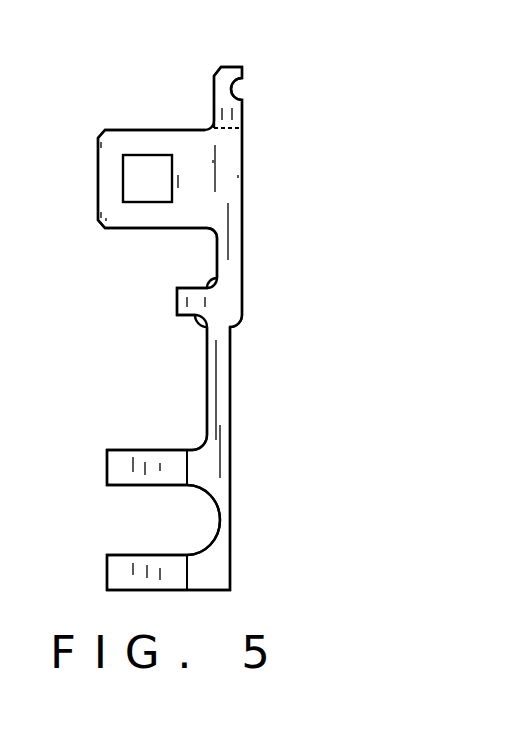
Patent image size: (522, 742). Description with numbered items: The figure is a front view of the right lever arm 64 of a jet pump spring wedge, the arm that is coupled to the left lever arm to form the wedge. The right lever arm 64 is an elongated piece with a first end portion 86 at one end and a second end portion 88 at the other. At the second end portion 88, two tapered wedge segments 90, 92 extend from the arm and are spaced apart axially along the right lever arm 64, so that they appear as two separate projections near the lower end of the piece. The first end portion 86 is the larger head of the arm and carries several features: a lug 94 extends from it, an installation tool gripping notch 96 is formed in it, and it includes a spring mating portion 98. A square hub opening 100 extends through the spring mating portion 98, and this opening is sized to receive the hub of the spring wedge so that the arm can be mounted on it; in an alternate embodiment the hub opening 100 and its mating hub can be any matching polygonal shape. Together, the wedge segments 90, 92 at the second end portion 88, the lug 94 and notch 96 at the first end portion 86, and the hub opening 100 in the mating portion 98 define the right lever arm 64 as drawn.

The right lever arm 64 is at (333, 112).
The first end portion 86 is at (243, 231).
The second end portion 88 is at (231, 513).
The tapered wedge segment 90 is at (152, 448).
The tapered wedge segment 92 is at (150, 552).
The lug 94 is at (175, 302).
The installation tool gripping notch 96 is at (250, 88).
The spring mating portion 98 is at (195, 210).
The square hub opening 100 is at (143, 172).